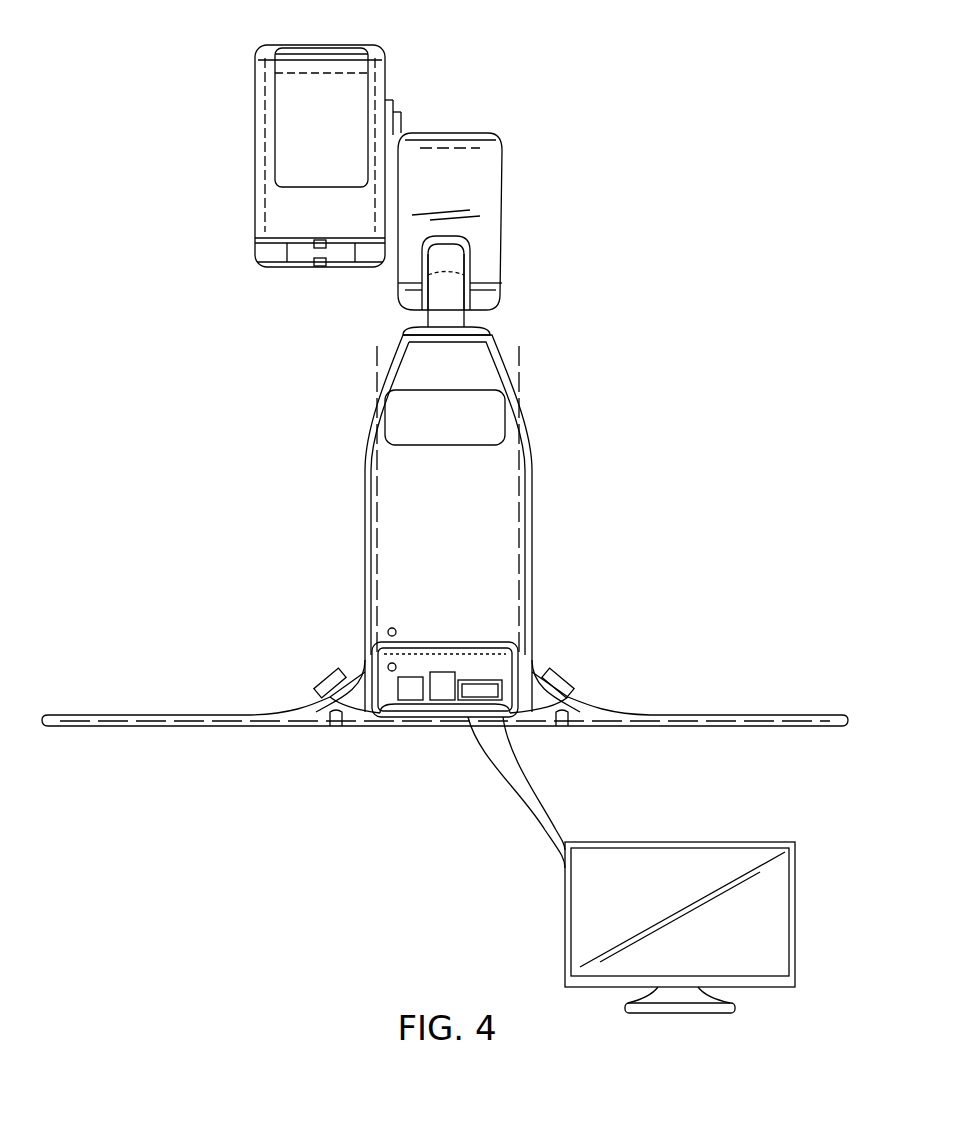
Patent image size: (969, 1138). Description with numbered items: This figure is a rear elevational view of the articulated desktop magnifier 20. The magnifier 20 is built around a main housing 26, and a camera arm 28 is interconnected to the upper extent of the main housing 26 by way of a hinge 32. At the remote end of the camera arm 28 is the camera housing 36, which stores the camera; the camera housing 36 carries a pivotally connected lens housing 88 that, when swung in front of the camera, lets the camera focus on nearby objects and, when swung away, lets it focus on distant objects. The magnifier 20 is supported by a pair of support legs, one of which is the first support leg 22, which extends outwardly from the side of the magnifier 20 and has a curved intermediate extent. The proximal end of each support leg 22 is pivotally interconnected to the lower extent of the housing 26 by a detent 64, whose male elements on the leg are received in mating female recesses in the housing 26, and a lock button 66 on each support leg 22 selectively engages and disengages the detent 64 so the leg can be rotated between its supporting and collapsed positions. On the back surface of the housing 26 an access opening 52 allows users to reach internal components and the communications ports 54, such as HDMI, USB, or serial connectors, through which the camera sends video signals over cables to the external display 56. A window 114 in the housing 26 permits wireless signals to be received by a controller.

The desktop magnifier 20 is at (445, 413).
The first support leg 22 is at (445, 706).
The main housing 26 is at (481, 524).
The camera arm 28 is at (487, 190).
The hinge 32 is at (460, 323).
The camera housing 36 is at (258, 185).
The access opening 52 is at (445, 685).
The communications ports 54 is at (440, 670).
The external display 56 is at (795, 893).
The detent 64 is at (336, 724).
The lock button 66 is at (320, 675).
The lens housing 88 is at (273, 250).
The window 114 is at (495, 418).